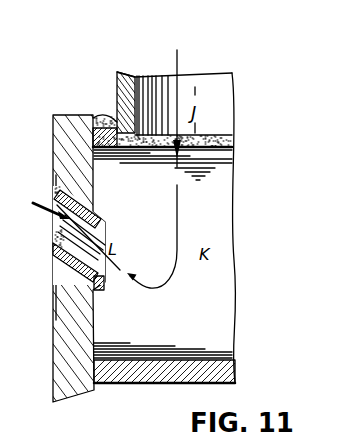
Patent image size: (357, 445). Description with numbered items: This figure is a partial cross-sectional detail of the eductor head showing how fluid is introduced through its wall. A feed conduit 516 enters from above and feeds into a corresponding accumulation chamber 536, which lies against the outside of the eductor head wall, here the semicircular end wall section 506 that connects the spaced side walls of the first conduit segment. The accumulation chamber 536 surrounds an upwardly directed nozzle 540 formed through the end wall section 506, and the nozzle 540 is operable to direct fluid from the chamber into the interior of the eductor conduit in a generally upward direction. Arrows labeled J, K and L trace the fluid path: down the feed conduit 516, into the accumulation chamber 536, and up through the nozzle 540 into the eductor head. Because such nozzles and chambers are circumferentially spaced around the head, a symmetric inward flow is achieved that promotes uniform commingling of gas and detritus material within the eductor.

The feed conduit 516 is at (118, 90).
The semicircular end wall section 506 is at (58, 300).
The upwardly directed nozzle 540 is at (56, 196).
The accumulation chamber 536 is at (137, 378).